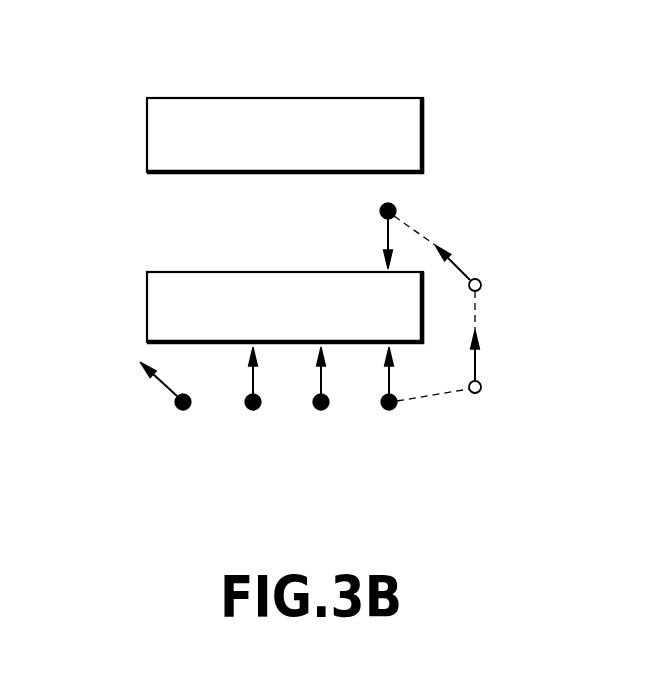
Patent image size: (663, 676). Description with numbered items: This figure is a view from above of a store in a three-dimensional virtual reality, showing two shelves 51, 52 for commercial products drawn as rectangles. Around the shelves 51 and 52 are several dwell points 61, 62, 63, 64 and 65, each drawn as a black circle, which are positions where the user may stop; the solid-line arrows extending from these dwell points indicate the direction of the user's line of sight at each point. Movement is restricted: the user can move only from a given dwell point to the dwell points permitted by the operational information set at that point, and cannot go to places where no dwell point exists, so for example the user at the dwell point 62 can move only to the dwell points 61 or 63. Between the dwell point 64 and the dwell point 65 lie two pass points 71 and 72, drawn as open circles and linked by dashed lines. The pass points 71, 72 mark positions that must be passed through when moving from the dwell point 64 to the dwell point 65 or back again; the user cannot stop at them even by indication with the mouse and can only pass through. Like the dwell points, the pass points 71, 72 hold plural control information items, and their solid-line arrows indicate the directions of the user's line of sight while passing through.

The shelf 51 is at (368, 117).
The shelf 52 is at (167, 300).
The dwell point 61 is at (183, 410).
The dwell point 62 is at (253, 410).
The dwell point 63 is at (321, 410).
The dwell point 64 is at (389, 410).
The dwell point 65 is at (396, 207).
The pass point 71 is at (482, 386).
The pass point 72 is at (481, 282).